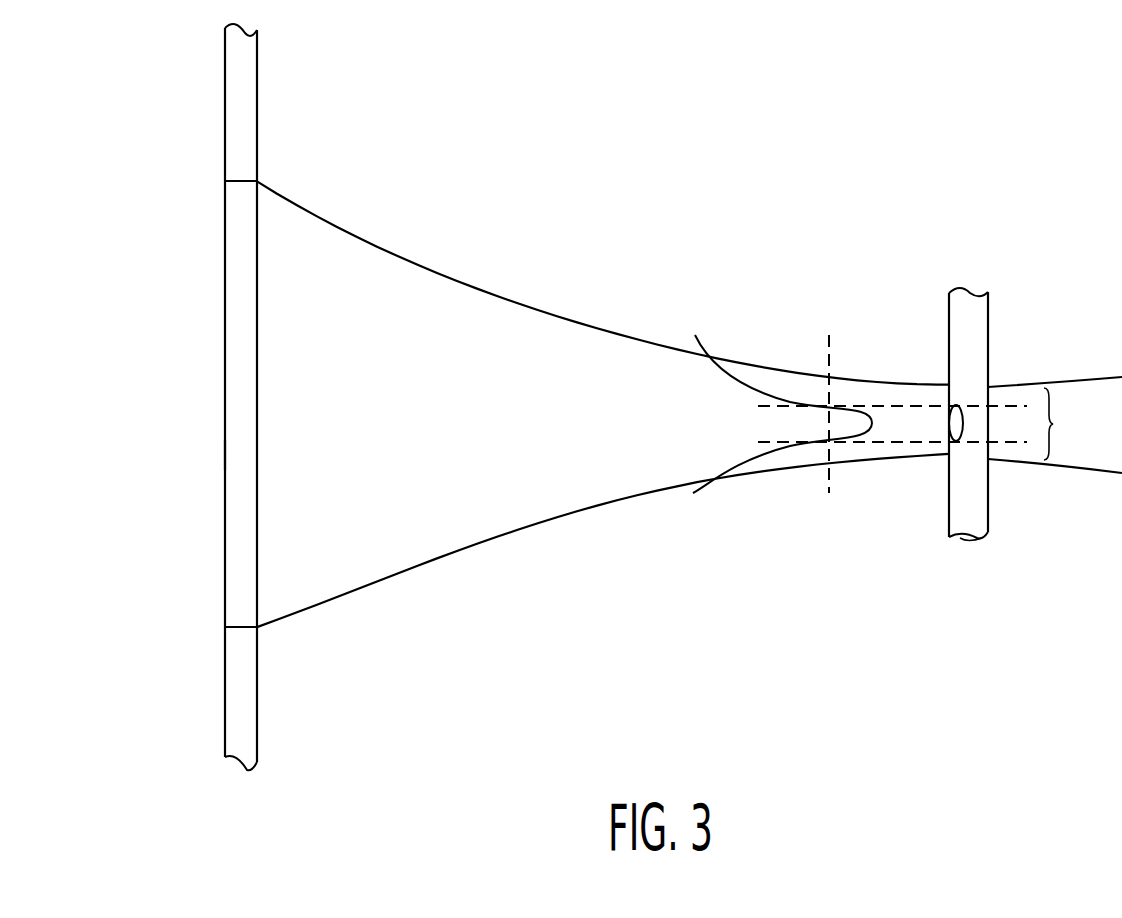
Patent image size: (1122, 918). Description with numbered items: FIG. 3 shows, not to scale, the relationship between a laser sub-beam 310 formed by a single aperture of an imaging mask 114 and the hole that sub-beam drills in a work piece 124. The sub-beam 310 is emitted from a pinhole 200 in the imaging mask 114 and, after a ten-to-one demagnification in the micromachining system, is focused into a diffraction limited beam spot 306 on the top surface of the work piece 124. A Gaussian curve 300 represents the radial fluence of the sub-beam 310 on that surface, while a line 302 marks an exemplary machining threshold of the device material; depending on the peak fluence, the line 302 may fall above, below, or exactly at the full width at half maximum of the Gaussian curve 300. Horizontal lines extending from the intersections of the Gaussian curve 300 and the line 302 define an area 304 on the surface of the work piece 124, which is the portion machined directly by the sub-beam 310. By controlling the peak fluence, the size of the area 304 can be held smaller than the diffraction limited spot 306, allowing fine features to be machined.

The imaging mask 114 is at (257, 737).
The work piece 124 is at (990, 502).
The pinhole 200 is at (230, 450).
The Gaussian curve 300 is at (750, 458).
The line 302 is at (825, 362).
The area 304 is at (952, 432).
The diffraction limited beam spot 306 is at (925, 424).
The sub-beam 310 is at (452, 332).